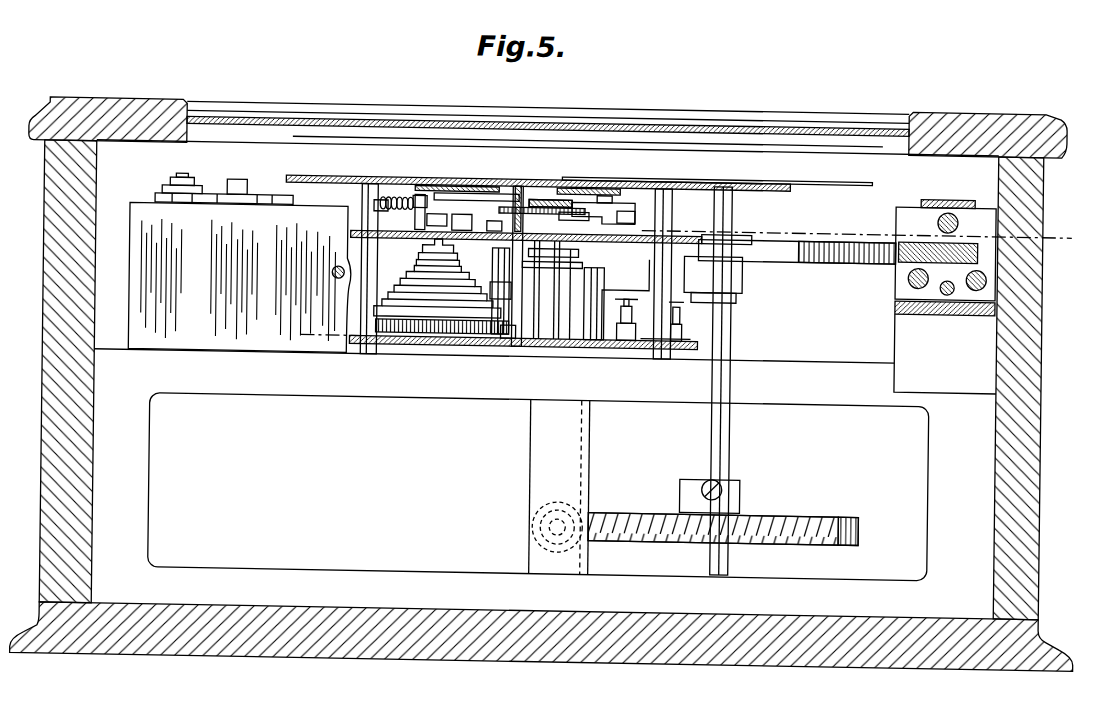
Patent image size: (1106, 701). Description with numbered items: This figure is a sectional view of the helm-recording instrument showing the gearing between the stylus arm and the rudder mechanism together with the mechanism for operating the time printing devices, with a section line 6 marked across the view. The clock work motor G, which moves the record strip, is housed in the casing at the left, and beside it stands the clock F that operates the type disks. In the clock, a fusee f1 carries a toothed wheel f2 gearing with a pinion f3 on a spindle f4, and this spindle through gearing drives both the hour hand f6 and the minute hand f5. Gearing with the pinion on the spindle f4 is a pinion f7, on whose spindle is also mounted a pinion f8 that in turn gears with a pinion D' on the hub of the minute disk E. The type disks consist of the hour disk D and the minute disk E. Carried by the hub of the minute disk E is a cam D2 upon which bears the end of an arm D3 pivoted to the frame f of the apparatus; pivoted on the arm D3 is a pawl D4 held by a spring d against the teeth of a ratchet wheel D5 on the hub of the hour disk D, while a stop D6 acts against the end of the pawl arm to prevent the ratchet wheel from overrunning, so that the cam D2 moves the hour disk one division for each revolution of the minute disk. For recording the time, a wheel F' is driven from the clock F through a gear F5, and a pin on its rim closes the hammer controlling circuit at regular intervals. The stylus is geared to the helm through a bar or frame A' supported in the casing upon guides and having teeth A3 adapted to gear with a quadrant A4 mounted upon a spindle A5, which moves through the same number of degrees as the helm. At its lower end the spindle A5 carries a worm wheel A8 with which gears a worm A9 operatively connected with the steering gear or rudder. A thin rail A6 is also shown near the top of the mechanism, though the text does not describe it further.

The clock work motor G is at (240, 262).
The arm D3 is at (437, 181).
The cam D2 is at (450, 190).
The pawl D4 is at (460, 222).
The hour hand f6 is at (493, 226).
The pinion D' is at (455, 146).
The hour disk D is at (537, 216).
The minute disk E is at (572, 207).
The ratchet wheel D5 is at (603, 193).
The minute hand f5 is at (547, 203).
The frame f is at (603, 196).
The pinion f8 is at (627, 197).
The pinion f7 is at (588, 214).
The thin rail A6 is at (809, 182).
The stop D6 is at (377, 211).
The spring d is at (420, 219).
The fusee f1 is at (423, 268).
The clock F is at (486, 290).
The spindle f4 is at (505, 296).
The section line 6 is at (687, 286).
The toothed wheel f2 is at (437, 343).
The pinion f3 is at (507, 339).
The gear F5 is at (590, 321).
The wheel F' is at (703, 322).
The quadrant A4 is at (836, 247).
The teeth A3 is at (896, 240).
The bar or frame A' is at (946, 288).
The spindle A5 is at (730, 434).
The worm A9 is at (565, 505).
The worm wheel A8 is at (745, 518).